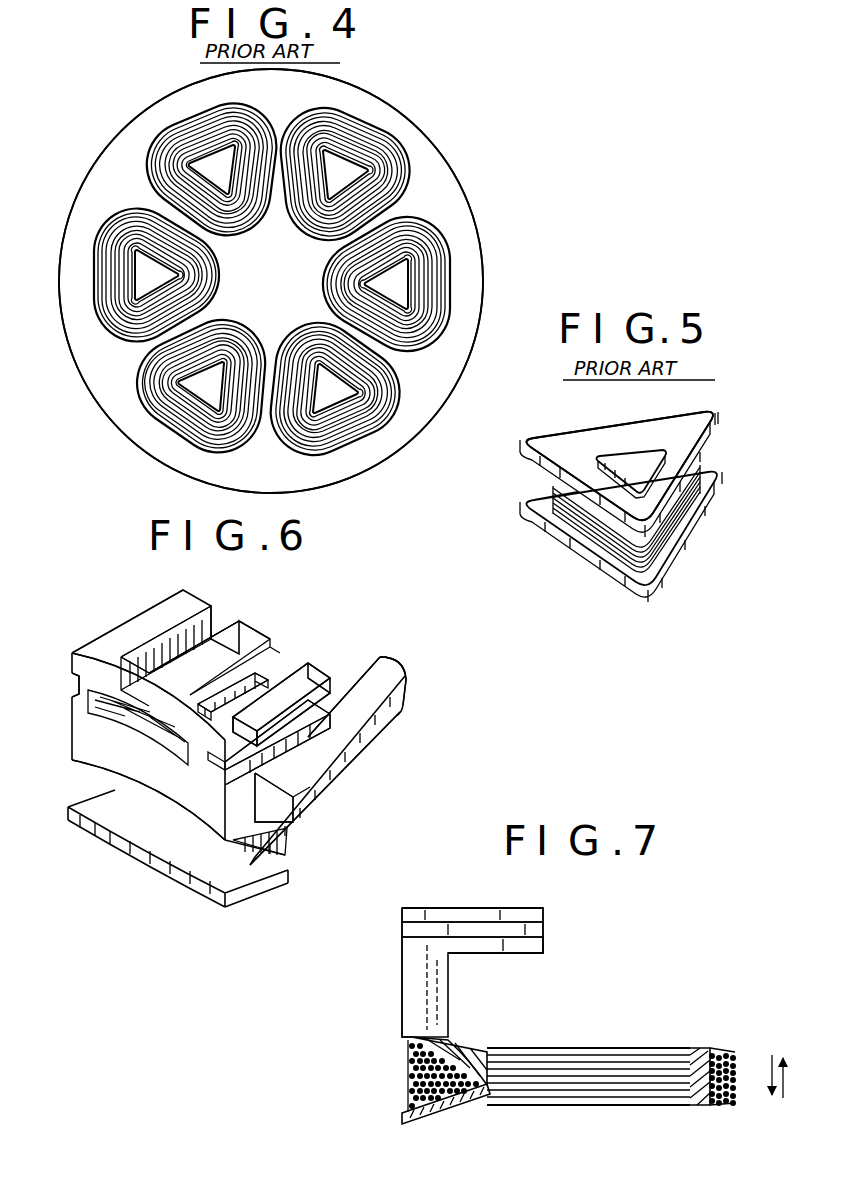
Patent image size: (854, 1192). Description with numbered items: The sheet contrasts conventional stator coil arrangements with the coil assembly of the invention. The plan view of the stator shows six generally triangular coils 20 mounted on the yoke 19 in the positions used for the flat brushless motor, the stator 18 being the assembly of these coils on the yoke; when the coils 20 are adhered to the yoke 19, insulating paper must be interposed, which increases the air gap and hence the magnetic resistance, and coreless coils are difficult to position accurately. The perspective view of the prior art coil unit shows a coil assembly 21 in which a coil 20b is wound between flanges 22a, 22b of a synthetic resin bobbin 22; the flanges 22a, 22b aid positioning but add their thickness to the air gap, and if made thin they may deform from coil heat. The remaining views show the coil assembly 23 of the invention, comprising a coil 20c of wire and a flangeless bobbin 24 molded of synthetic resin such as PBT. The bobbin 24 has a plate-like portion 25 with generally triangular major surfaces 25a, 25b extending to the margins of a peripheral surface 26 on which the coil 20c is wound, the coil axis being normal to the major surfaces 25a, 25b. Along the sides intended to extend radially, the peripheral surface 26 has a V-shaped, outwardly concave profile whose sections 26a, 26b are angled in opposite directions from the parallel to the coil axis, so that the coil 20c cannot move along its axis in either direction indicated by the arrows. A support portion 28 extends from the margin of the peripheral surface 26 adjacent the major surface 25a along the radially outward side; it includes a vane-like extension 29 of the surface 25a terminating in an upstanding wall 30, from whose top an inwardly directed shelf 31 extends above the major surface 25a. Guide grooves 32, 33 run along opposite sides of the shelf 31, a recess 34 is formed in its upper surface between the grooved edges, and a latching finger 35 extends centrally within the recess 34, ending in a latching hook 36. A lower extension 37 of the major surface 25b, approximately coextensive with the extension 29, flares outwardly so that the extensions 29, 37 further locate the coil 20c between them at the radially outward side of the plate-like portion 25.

In FIG. 4, the stator core 18 is at (112, 388).
In FIG. 4, the yoke 19 is at (453, 205).
In FIG. 4, the coil 20 is at (170, 135).
In FIG. 5, the coil assembly 21 is at (696, 402).
In FIG. 5, the bobbin 22 is at (618, 460).
In FIG. 5, the flange 22a is at (708, 437).
In FIG. 5, the flange 22b is at (708, 513).
In FIG. 5, the coil 20b is at (588, 518).
In FIG. 7, the coil assembly 23 is at (645, 990).
In FIG. 6, the flangeless bobbin 24 is at (342, 638).
In FIG. 7, the flangeless bobbin 24 is at (582, 1047).
In FIG. 6, the plate-like portion 25 is at (375, 700).
In FIG. 7, the plate-like portion 25 is at (700, 1050).
In FIG. 6, the major surface 25a is at (383, 674).
In FIG. 7, the major surface 25a is at (650, 1050).
In FIG. 6, the major surface 25b is at (360, 777).
In FIG. 7, the major surface 25b is at (578, 1108).
In FIG. 6, the peripheral surface 26 is at (382, 732).
In FIG. 7, the angled section 26a is at (735, 1060).
In FIG. 7, the angled section 26b is at (712, 1108).
In FIG. 6, the support portion 28 is at (82, 735).
In FIG. 7, the support portion 28 is at (400, 998).
In FIG. 6, the extension 29 is at (265, 812).
In FIG. 7, the extension 29 is at (455, 1050).
In FIG. 6, the upstanding wall 30 is at (88, 757).
In FIG. 7, the upstanding wall 30 is at (420, 1014).
In FIG. 6, the shelf 31 is at (303, 745).
In FIG. 7, the shelf 31 is at (497, 957).
In FIG. 6, the guide groove 32 is at (320, 717).
In FIG. 7, the guide groove 32 is at (530, 928).
In FIG. 6, the guide groove 33 is at (70, 683).
In FIG. 6, the recess 34 is at (187, 658).
In FIG. 6, the latching finger 35 is at (247, 647).
In FIG. 6, the latching hook 36 is at (262, 675).
In FIG. 6, the lower extension 37 is at (160, 885).
In FIG. 7, the lower extension 37 is at (436, 1122).
In FIG. 7, the coil 20c is at (727, 1110).